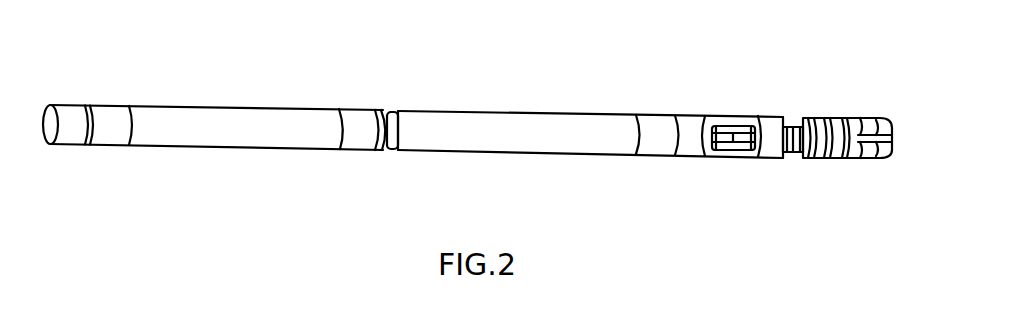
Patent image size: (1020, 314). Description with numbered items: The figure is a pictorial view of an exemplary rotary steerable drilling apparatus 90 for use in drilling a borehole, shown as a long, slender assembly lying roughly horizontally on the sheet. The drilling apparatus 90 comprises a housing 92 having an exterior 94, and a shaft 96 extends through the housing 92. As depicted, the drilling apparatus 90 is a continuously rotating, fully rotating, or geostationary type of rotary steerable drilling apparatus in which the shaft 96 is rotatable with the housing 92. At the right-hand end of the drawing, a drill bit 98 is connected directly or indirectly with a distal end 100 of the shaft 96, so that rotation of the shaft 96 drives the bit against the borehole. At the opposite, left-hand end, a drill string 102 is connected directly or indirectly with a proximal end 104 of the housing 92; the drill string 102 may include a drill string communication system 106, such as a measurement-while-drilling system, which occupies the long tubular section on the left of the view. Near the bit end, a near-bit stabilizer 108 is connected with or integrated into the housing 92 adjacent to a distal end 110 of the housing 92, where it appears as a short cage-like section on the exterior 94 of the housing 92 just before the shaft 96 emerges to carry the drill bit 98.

The rotary steerable drilling apparatus 90 is at (562, 147).
The housing 92 is at (602, 118).
The exterior 94 is at (538, 108).
The shaft 96 is at (793, 147).
The drill bit 98 is at (870, 148).
The distal end of the shaft 100 is at (850, 115).
The drill string 102 is at (87, 147).
The proximal end of the housing 104 is at (90, 102).
The drill string communication system 106 is at (257, 138).
The near-bit stabilizer 108 is at (720, 118).
The distal end of the housing 110 is at (777, 157).